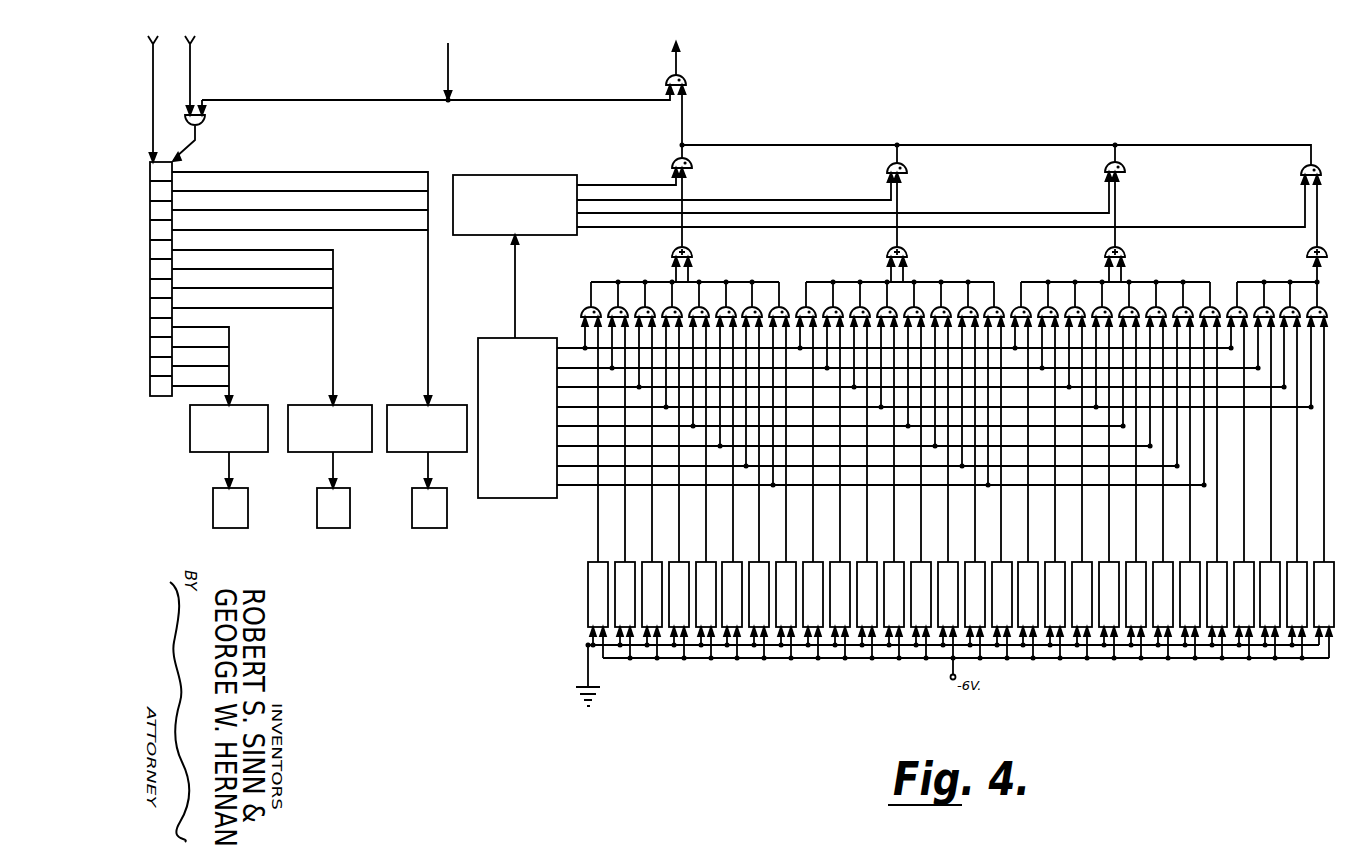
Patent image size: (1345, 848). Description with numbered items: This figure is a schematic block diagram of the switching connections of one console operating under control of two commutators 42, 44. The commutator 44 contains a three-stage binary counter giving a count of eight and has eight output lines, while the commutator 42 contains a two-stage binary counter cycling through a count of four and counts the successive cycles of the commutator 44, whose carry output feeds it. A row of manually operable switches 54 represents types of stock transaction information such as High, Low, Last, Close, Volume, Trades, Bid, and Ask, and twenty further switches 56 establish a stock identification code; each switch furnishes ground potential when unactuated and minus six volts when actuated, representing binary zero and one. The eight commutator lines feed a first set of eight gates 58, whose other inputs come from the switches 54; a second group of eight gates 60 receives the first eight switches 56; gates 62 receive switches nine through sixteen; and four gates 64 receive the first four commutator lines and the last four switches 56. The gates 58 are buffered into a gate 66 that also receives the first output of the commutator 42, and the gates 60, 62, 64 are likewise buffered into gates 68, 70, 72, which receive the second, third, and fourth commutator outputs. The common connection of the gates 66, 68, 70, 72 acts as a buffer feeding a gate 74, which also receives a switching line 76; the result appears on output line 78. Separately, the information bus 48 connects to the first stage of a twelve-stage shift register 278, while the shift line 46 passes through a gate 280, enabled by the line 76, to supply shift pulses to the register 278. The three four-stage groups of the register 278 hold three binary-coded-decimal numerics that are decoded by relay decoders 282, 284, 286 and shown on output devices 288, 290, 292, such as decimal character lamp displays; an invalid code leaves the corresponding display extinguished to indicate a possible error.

The commutator 42 is at (540, 238).
The commutator 44 is at (480, 340).
The shift line 46 is at (192, 62).
The information bus 48 is at (155, 78).
The manually operable switches 54 is at (586, 615).
The manually operable switches 56 is at (816, 562).
The gates 58 is at (584, 300).
The gates 60 is at (808, 305).
The gates 62 is at (1023, 305).
The gates 64 is at (1240, 305).
The gate 66 is at (692, 163).
The gate 68 is at (907, 165).
The gate 70 is at (1125, 164).
The gate 72 is at (1301, 169).
The gate 74 is at (688, 81).
The switching line 76 is at (452, 74).
The output line 78 is at (680, 52).
The shift register 278 is at (162, 397).
The gate 280 is at (205, 120).
The relay decoder 282 is at (207, 455).
The relay decoder 284 is at (311, 405).
The relay decoder 286 is at (414, 405).
The output device 288 is at (212, 511).
The output device 290 is at (316, 511).
The output device 292 is at (411, 516).